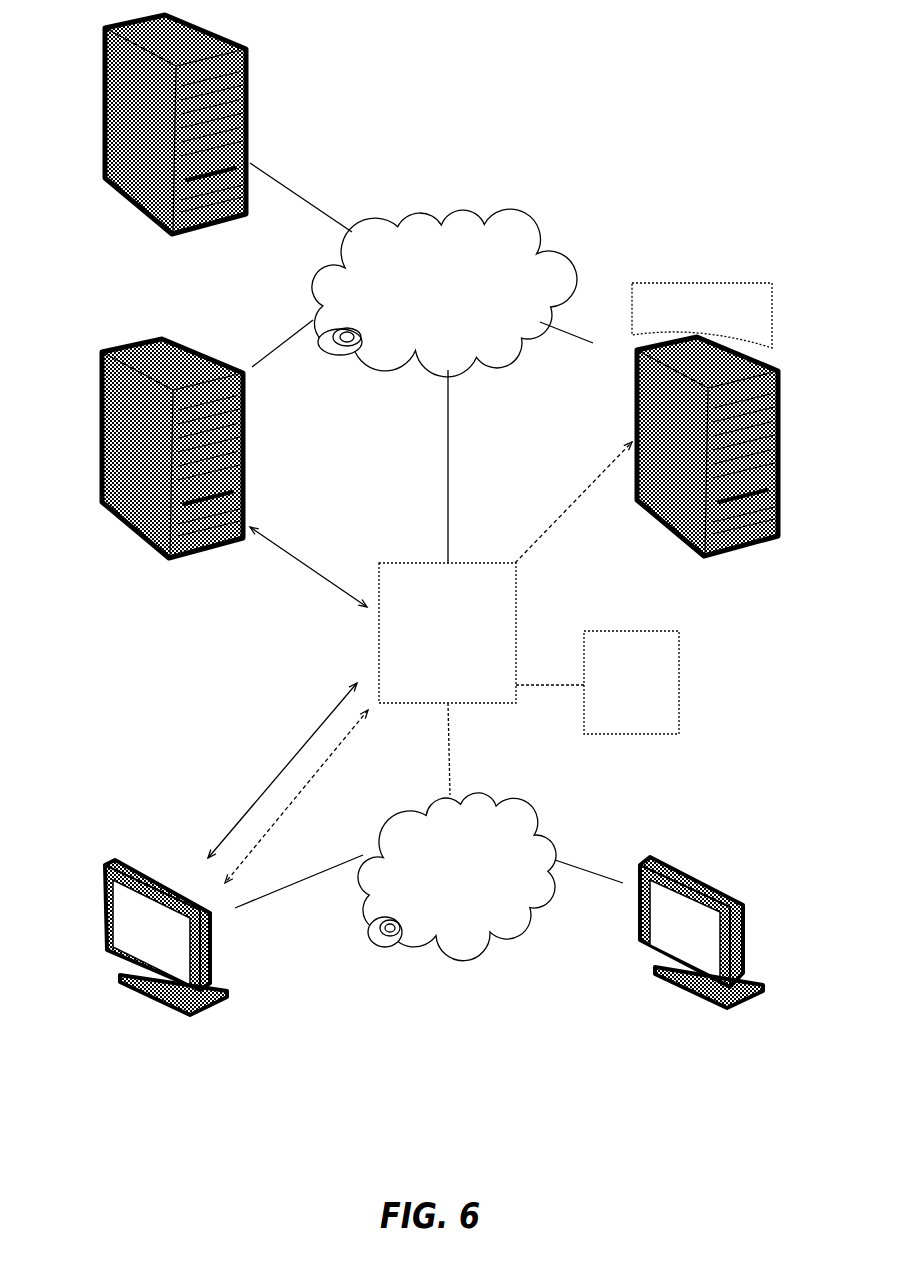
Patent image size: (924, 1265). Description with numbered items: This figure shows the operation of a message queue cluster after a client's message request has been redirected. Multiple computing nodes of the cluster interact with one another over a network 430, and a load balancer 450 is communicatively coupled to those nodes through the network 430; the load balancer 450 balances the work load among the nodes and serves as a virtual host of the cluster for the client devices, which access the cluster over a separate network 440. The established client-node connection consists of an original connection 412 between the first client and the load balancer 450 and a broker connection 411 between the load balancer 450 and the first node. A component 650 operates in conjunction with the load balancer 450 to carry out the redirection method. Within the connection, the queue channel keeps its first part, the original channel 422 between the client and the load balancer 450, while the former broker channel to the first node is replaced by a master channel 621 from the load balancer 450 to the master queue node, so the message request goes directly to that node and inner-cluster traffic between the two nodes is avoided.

The network 430 is at (444, 386).
The network 440 is at (429, 832).
The load balancer 450 is at (447, 633).
The component 650 is at (597, 682).
The broker connection 411 is at (308, 560).
The original connection 412 is at (282, 770).
The original channel 422 is at (303, 796).
The master channel 621 is at (573, 502).